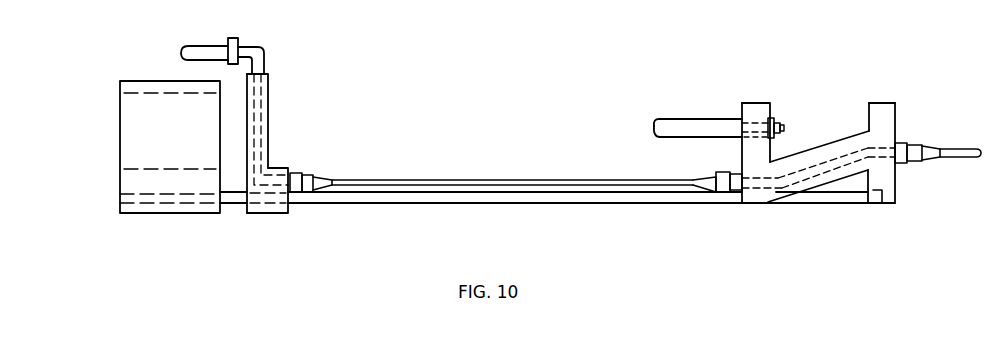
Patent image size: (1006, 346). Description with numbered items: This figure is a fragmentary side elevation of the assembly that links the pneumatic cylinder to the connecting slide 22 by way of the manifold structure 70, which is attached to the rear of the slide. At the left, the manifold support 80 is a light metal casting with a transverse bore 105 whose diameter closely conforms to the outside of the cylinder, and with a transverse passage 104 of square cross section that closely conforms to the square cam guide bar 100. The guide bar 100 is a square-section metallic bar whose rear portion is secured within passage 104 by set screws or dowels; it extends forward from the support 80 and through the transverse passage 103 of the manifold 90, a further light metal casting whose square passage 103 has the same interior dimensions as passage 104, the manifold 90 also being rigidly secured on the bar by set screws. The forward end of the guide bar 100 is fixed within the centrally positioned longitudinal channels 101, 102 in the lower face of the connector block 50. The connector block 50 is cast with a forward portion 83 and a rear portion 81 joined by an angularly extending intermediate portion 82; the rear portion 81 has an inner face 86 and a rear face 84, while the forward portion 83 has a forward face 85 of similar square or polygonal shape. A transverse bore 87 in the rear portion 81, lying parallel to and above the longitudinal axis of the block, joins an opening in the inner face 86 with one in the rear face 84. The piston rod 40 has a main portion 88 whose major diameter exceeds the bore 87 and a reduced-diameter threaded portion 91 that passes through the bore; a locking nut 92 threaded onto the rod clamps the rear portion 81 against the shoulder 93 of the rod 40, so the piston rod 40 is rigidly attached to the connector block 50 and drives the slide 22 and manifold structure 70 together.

The connecting slide 22 is at (896, 105).
The piston rod 40 is at (668, 117).
The connector block 50 is at (897, 118).
The manifold structure 70 is at (267, 46).
The manifold support 80 is at (132, 81).
The rear portion 81 is at (757, 103).
The intermediate portion 82 is at (817, 146).
The forward portion 83 is at (878, 103).
The rear face 84 is at (742, 122).
The forward face 85 is at (897, 178).
The inner face 86 is at (773, 117).
The transverse bore 87 is at (757, 135).
The main portion 88 is at (668, 137).
The manifold 90 is at (268, 128).
The threaded portion 91 is at (784, 128).
The locking nut 92 is at (781, 117).
The shoulder 93 is at (742, 122).
The cam guide bar 100 is at (468, 202).
The longitudinal channel 101 is at (771, 193).
The longitudinal channel 102 is at (880, 205).
The transverse passage 103 is at (272, 202).
The transverse passage 104 is at (135, 205).
The transverse bore 105 is at (140, 95).